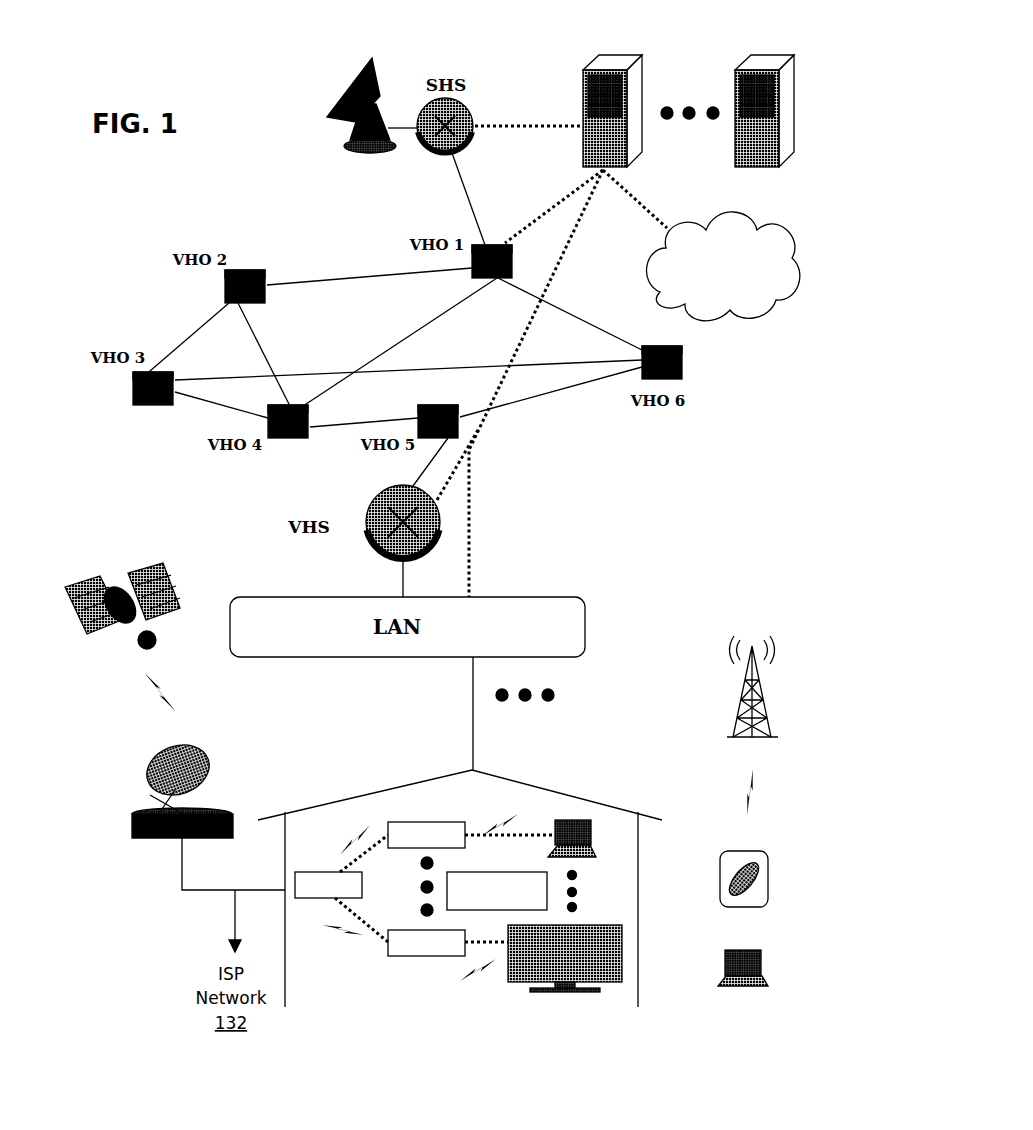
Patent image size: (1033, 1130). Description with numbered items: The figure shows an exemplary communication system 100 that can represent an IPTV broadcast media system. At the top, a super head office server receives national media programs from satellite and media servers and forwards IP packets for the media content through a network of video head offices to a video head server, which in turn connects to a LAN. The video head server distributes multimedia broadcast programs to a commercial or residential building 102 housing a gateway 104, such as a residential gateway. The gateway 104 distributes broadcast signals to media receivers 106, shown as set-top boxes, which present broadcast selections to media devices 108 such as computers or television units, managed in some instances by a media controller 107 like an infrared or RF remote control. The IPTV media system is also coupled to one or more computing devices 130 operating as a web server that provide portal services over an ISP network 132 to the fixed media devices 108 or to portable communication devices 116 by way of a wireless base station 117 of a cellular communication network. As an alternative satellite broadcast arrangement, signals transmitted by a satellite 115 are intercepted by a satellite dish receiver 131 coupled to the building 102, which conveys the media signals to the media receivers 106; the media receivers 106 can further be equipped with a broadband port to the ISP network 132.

The communication system 100 is at (133, 85).
The building 102 is at (460, 900).
The gateway 104 is at (328, 885).
The media receiver 106 is at (426, 889).
The media controller 107 is at (497, 891).
The media device 108 is at (578, 820).
The satellite 115 is at (80, 622).
The portable communication device 116 is at (768, 862).
The wireless base station 117 is at (763, 635).
The computing device 130 is at (767, 56).
The satellite dish receiver 131 is at (132, 818).
The ISP network 132 is at (723, 266).